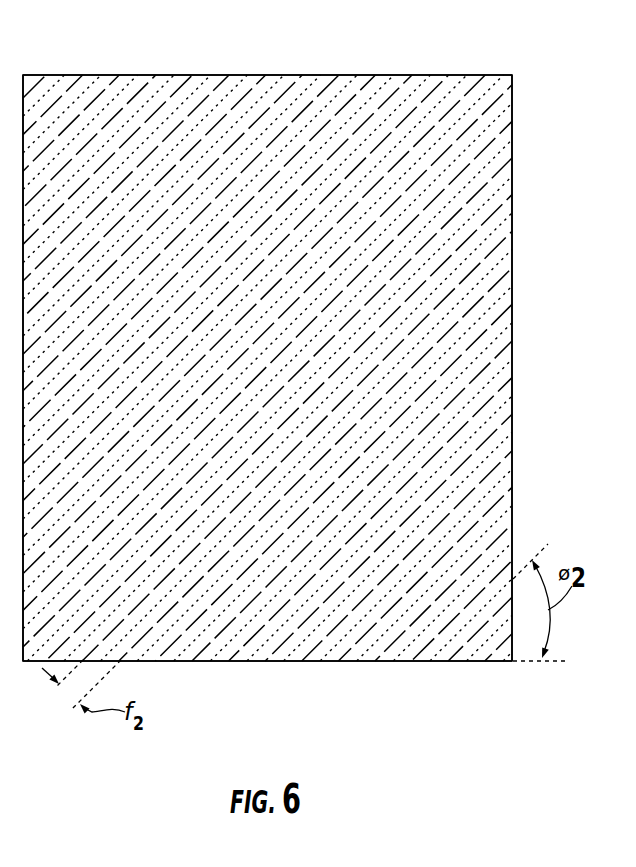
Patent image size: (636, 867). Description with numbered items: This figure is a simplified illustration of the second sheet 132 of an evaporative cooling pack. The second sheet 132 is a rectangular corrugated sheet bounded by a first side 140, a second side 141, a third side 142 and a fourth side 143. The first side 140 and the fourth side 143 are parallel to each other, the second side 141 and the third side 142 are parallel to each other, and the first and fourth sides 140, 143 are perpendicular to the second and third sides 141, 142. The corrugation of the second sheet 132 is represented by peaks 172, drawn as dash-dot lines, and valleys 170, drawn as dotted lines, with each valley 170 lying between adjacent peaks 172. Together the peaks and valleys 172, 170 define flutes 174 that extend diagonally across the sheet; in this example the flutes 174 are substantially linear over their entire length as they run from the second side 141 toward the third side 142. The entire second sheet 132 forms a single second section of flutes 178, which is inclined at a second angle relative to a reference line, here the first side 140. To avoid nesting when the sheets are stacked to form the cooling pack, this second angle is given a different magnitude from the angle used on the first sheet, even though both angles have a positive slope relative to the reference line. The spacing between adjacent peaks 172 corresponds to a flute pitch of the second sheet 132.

The second sheet 132 is at (308, 606).
The first side 140 is at (215, 662).
The second side 141 is at (23, 606).
The third side 142 is at (512, 358).
The fourth side 143 is at (390, 75).
The valleys 170 is at (497, 283).
The peaks 172 is at (505, 257).
The flutes 174 is at (520, 232).
The second section of flutes 178 is at (416, 688).